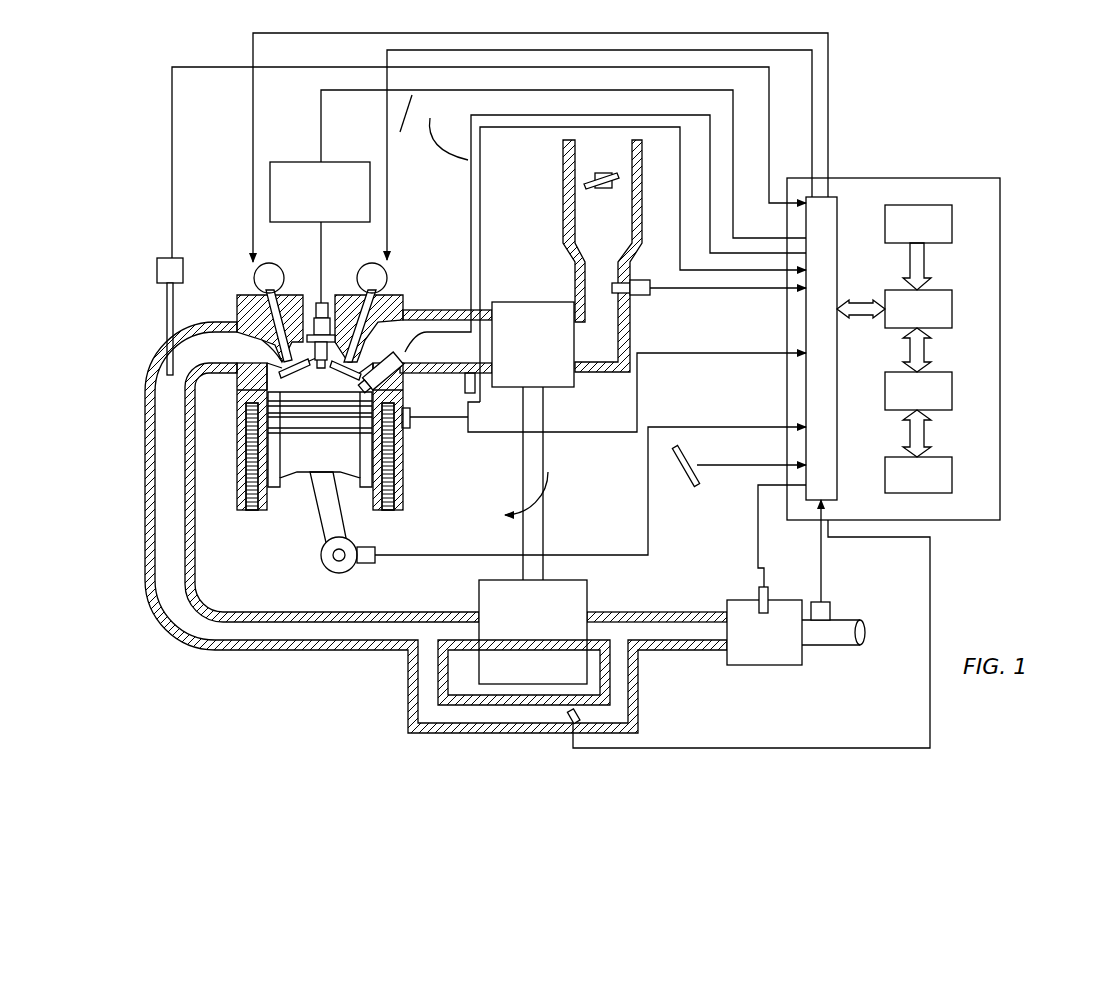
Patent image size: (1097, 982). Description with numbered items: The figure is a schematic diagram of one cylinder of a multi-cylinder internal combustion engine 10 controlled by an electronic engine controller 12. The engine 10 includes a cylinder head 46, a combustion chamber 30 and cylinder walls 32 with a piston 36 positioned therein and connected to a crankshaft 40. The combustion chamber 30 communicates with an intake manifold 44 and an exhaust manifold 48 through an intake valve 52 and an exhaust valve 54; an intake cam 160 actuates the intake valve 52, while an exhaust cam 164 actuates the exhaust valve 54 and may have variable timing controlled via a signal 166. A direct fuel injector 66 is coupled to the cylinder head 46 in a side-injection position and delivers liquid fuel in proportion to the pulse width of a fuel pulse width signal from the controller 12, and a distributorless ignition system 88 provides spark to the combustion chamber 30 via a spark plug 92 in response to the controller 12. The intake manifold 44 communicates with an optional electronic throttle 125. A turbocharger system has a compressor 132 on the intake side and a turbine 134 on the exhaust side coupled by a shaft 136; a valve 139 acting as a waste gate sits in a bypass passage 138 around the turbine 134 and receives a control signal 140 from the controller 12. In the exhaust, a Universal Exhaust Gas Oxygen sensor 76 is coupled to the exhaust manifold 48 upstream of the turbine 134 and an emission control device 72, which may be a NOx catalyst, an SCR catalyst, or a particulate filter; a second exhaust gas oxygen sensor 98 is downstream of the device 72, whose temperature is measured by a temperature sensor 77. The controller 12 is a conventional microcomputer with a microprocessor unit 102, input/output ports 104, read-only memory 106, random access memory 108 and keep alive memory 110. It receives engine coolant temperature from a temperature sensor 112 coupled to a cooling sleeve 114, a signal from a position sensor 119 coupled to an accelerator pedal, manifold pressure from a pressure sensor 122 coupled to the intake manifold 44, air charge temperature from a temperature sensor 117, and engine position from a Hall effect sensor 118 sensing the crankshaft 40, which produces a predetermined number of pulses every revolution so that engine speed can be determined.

The internal combustion engine 10 is at (243, 258).
The electronic engine controller 12 is at (893, 318).
The combustion chamber 30 is at (318, 378).
The cylinder walls 32 is at (265, 505).
The piston 36 is at (322, 455).
The crankshaft 40 is at (321, 563).
The intake manifold 44 is at (428, 308).
The cylinder head 46 is at (389, 262).
The exhaust manifold 48 is at (146, 390).
The intake valve 52 is at (409, 352).
The exhaust valve 54 is at (278, 362).
The direct fuel injector 66 is at (406, 357).
The emission control device 72 is at (782, 665).
The Universal Exhaust Gas Oxygen sensor 76 is at (183, 258).
The temperature sensor 77 is at (768, 587).
The distributorless ignition system 88 is at (333, 162).
The spark plug 92 is at (320, 301).
The second exhaust gas oxygen sensor 98 is at (832, 612).
The microprocessor unit 102 is at (935, 290).
The input/output ports 104 is at (838, 245).
The read-only memory 106 is at (928, 205).
The random access memory 108 is at (935, 372).
The keep alive memory 110 is at (935, 457).
The temperature sensor 112 is at (412, 417).
The cooling sleeve 114 is at (249, 512).
The temperature sensor 117 is at (652, 292).
The Hall effect sensor 118 is at (372, 548).
The position sensor 119 is at (690, 487).
The pressure sensor 122 is at (475, 395).
The electronic throttle 125 is at (590, 178).
The compressor 132 is at (533, 344).
The turbine 134 is at (533, 632).
The shaft 136 is at (545, 472).
The bypass passage 138 is at (408, 715).
The waste gate valve 139 is at (570, 725).
The control signal 140 is at (665, 748).
The intake cam 160 is at (360, 268).
The exhaust cam 164 is at (254, 278).
The signal 166 is at (251, 45).